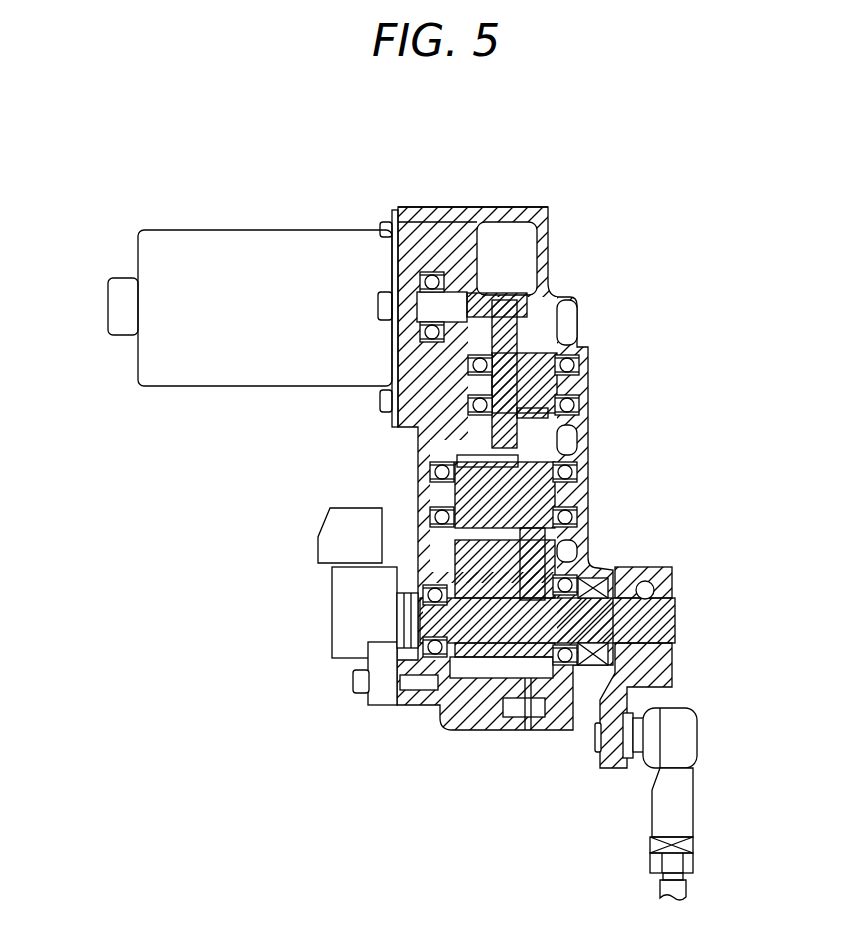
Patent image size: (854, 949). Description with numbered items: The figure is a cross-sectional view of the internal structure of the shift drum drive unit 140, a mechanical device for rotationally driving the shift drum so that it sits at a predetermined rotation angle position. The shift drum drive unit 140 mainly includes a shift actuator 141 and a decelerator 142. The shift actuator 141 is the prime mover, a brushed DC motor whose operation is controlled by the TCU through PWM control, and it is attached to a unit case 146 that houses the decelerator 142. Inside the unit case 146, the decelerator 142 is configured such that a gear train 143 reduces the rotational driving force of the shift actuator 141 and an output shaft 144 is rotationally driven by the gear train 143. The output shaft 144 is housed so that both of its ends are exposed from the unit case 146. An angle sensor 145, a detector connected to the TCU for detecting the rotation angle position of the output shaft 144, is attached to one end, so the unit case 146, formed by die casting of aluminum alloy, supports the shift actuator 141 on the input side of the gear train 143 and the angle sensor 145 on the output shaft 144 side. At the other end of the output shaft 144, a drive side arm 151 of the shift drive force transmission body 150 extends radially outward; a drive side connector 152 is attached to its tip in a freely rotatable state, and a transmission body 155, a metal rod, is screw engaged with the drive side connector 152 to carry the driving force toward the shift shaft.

The shift drum drive unit 140 is at (652, 175).
The shift actuator 141 is at (234, 230).
The decelerator 142 is at (577, 295).
The gear train 143 is at (530, 355).
The output shaft 144 is at (677, 620).
The angle sensor 145 is at (330, 617).
The unit case 146 is at (463, 207).
The shift drive force transmission body 150 is at (698, 709).
The drive side arm 151 is at (665, 567).
The drive side connector 152 is at (695, 800).
The transmission body 155 is at (686, 893).